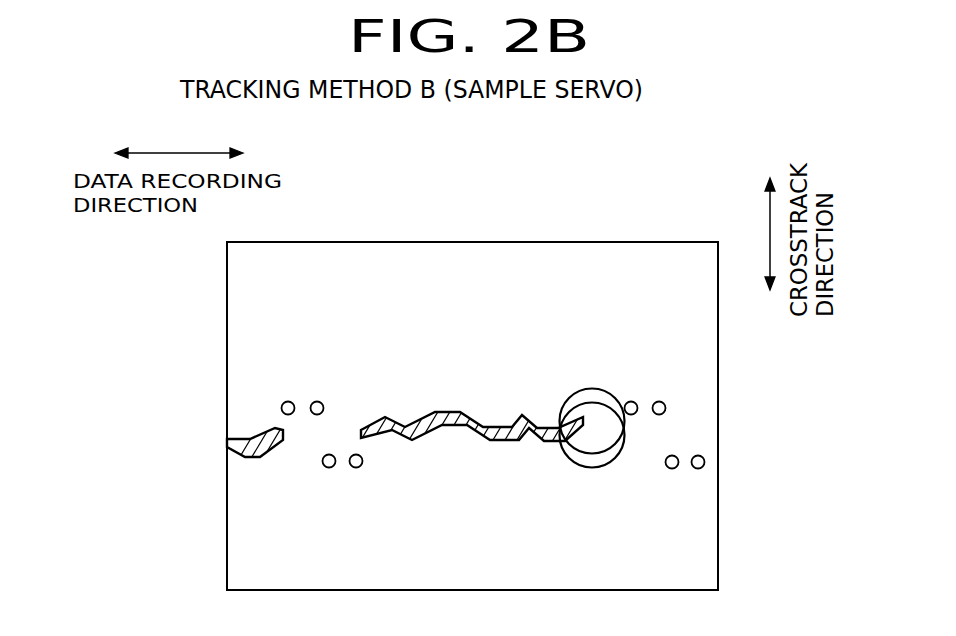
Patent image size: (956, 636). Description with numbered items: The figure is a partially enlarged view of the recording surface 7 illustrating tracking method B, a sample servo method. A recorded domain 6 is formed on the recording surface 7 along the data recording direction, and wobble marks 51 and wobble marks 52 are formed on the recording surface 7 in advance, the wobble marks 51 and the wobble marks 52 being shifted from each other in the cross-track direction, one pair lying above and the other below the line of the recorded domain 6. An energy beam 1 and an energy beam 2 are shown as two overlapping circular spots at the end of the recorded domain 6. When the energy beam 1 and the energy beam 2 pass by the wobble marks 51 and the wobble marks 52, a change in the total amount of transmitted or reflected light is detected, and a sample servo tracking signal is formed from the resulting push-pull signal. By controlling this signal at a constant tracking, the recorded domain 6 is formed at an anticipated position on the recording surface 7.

The recording surface 7 is at (569, 272).
The recorded domain 6 is at (383, 413).
The energy beam 2 is at (615, 402).
The energy beam 1 is at (572, 453).
The wobble marks 51 is at (322, 398).
The wobble marks 52 is at (325, 468).